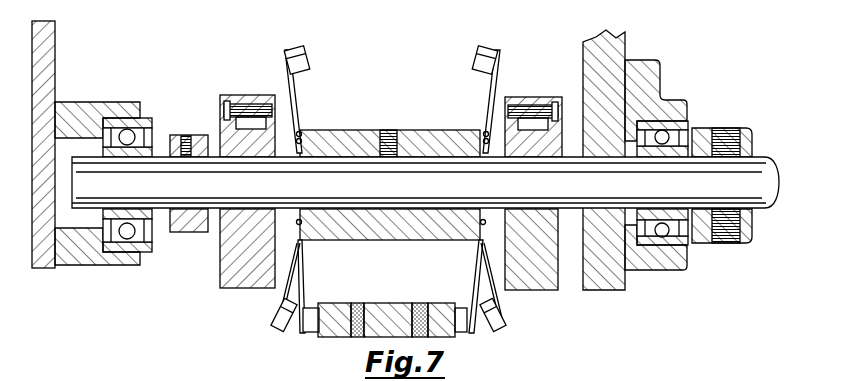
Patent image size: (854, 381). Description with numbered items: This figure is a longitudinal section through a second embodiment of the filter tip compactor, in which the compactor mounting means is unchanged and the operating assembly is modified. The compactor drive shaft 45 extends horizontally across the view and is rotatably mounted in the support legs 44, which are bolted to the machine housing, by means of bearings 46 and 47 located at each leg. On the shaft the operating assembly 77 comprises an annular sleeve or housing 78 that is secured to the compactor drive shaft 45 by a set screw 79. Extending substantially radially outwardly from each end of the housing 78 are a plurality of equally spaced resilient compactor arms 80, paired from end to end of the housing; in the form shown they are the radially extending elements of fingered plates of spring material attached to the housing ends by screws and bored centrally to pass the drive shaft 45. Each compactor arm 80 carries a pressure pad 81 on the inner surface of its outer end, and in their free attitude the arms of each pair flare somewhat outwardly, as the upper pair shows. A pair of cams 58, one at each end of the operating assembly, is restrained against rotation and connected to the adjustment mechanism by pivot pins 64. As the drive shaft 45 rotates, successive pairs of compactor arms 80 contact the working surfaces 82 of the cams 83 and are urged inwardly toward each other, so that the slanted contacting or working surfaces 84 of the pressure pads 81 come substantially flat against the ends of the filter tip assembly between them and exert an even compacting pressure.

The support legs 44 is at (55, 40).
The compactor drive shaft 45 is at (776, 180).
The bearing 46 is at (137, 119).
The bearing 47 is at (688, 125).
The cam 58 is at (222, 92).
The pivot pin 64 is at (276, 108).
The operating assembly 77 is at (384, 95).
The annular sleeve or housing 78 is at (335, 133).
The set screw 79 is at (388, 132).
The resilient compactor arms 80 is at (295, 100).
The pressure pad 81 is at (300, 51).
The working surfaces 82 is at (297, 268).
The cams 83 is at (225, 276).
The slanted contacting or working surfaces 84 is at (310, 60).